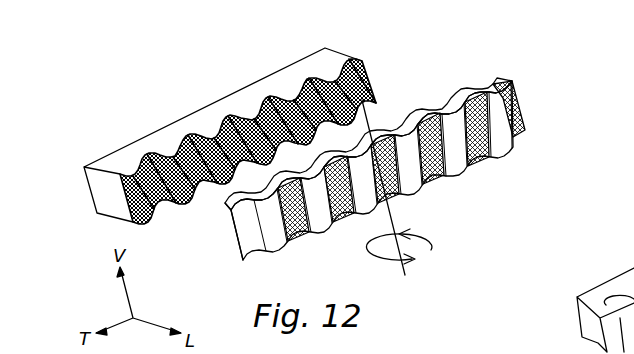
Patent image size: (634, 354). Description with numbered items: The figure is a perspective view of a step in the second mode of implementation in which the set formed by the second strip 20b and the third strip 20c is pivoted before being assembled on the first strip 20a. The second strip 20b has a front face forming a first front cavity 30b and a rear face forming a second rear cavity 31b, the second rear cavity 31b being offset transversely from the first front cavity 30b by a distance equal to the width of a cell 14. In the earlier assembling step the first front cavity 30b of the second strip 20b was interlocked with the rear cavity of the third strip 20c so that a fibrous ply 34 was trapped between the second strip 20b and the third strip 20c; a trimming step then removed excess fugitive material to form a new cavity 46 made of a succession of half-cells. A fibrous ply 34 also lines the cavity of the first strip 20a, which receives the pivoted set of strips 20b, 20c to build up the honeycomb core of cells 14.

The first strip 20a is at (286, 153).
The second strip 20b is at (419, 151).
The third strip 20c is at (419, 152).
The first front cavity 30b is at (530, 130).
The second rear cavity 31b is at (452, 100).
The fibrous ply 34 is at (138, 220).
The new cavity 46 is at (460, 163).
The cell 14 is at (633, 240).